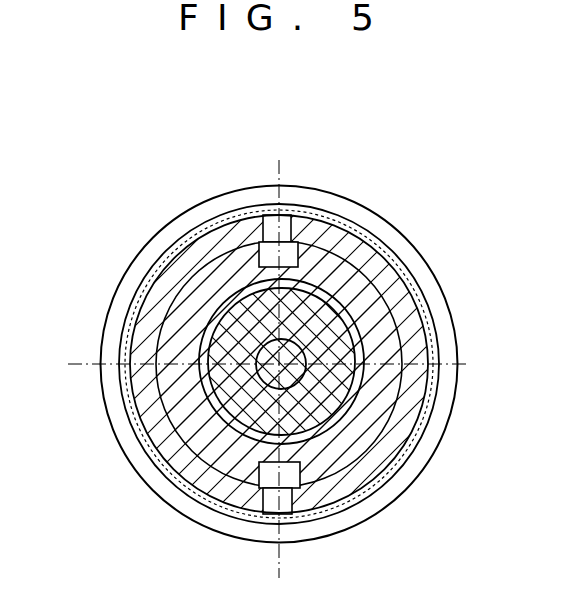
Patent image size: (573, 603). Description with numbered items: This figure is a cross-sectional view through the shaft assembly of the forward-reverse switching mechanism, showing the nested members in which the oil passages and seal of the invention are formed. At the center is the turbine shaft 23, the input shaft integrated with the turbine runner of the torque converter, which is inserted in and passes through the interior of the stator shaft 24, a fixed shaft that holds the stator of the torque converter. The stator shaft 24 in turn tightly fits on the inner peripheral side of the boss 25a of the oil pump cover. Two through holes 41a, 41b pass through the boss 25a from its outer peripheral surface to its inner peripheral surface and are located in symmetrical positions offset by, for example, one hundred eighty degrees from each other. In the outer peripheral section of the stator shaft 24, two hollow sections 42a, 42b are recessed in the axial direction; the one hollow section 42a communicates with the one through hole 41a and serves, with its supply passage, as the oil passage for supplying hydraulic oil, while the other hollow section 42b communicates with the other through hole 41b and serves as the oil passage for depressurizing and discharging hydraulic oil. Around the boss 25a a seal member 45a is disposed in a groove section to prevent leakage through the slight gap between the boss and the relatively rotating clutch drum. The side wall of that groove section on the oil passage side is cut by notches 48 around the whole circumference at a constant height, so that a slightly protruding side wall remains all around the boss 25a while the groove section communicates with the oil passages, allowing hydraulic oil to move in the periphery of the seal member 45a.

The turbine shaft 23 is at (235, 385).
The stator shaft 24 is at (177, 338).
The boss 25a is at (182, 263).
The through hole 41a is at (327, 214).
The through hole 41b is at (335, 516).
The hollow section 42a is at (292, 258).
The hollow section 42b is at (302, 463).
The seal member 45a is at (313, 188).
The notch 48 is at (413, 302).